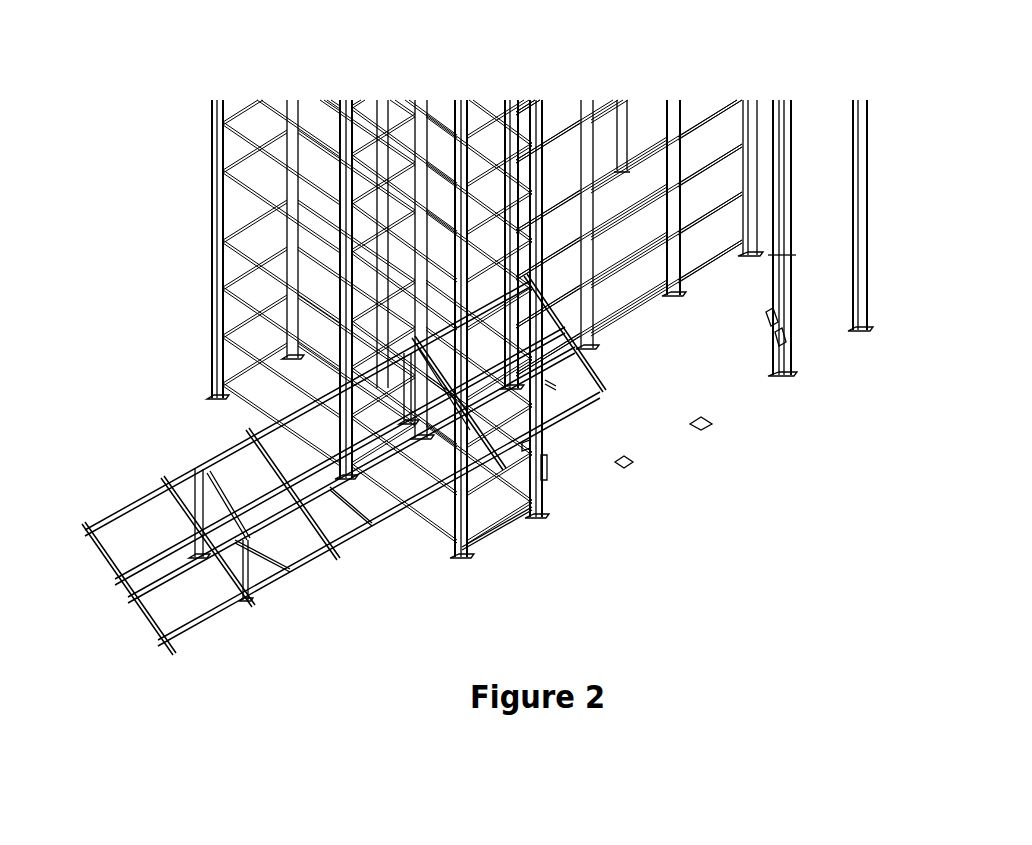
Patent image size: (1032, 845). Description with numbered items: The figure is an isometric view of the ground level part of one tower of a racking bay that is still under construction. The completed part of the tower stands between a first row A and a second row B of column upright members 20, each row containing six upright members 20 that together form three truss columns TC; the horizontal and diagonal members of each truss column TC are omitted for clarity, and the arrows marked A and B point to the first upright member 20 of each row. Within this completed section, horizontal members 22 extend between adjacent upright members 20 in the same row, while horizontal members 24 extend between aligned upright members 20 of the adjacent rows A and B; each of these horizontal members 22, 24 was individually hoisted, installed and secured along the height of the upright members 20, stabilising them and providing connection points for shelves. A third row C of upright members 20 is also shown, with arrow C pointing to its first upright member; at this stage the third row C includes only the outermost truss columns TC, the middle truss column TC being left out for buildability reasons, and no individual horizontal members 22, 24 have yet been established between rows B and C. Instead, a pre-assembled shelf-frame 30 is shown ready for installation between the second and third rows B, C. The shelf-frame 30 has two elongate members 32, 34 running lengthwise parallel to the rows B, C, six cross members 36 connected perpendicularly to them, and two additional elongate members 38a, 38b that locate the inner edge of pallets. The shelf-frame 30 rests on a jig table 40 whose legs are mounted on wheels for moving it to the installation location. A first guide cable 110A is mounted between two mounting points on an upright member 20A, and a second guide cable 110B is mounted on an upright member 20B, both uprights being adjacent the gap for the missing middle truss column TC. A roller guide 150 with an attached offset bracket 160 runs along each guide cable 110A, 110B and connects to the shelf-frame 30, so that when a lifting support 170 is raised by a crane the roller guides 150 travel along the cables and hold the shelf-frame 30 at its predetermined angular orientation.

The upright member 20 is at (290, 318).
The upright member 20A is at (540, 488).
The upright member 20B is at (784, 378).
The horizontal member 22 is at (263, 158).
The horizontal member 24 is at (250, 113).
The first row A is at (190, 328).
The second row B is at (330, 358).
The third row C is at (449, 572).
The truss column TC is at (537, 524).
The shelf-frame 30 is at (142, 642).
The elongate member 32 is at (210, 620).
The elongate member 34 is at (128, 513).
The cross member 36 is at (175, 655).
The additional elongate member 38a is at (130, 603).
The additional elongate member 38b is at (115, 582).
The jig table 40 is at (286, 600).
The lifting support 170 is at (370, 522).
The first guide cable 110A is at (550, 387).
The second guide cable 110B is at (773, 265).
The roller guide 150 is at (562, 460).
The offset bracket 160 is at (545, 450).